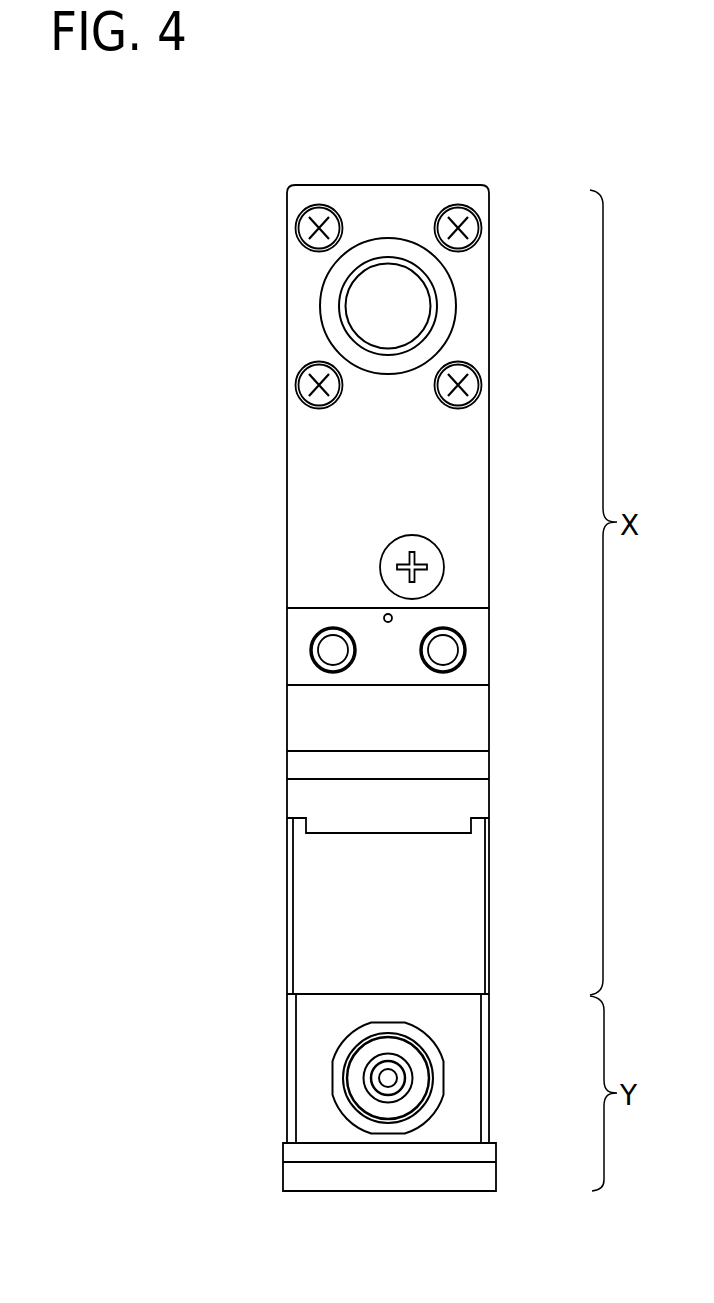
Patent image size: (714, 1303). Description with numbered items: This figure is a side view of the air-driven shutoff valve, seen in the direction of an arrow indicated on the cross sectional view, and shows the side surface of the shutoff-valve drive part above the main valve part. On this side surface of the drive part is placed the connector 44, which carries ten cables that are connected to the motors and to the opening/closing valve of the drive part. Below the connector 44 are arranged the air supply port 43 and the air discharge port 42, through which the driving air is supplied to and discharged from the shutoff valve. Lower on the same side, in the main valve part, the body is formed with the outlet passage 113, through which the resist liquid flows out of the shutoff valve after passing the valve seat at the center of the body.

The connector 44 is at (437, 306).
The air supply port 43 is at (316, 667).
The air discharge port 42 is at (462, 667).
The outlet passage 113 is at (427, 1080).